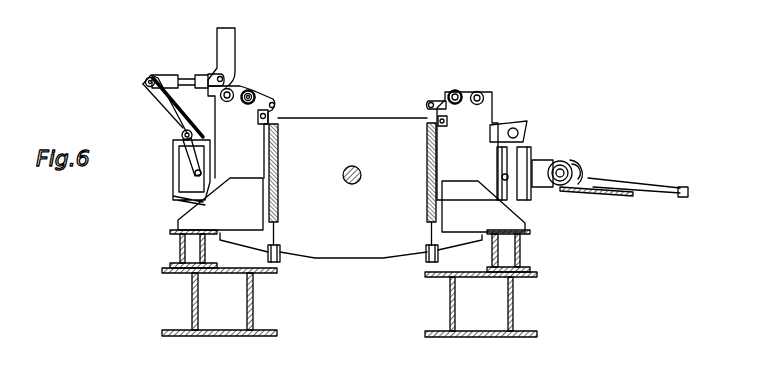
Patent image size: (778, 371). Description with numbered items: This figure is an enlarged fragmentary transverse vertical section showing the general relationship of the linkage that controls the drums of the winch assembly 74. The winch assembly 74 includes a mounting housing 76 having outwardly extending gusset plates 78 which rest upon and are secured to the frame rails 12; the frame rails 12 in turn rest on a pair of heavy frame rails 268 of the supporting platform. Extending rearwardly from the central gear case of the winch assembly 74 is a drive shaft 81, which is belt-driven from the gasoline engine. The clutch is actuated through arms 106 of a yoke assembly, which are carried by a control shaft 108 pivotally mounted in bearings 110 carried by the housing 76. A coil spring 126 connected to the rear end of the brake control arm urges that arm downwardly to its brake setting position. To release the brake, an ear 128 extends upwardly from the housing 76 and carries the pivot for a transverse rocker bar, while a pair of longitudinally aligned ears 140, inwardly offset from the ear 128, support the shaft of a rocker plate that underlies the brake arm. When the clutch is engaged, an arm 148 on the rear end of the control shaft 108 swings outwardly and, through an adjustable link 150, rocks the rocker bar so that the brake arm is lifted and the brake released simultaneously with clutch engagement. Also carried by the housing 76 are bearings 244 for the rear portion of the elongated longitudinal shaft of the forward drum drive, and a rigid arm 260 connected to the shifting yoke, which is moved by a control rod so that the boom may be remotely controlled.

The frame rails 12 is at (182, 242).
The winch assembly 74 is at (358, 110).
The mounting housing 76 is at (397, 248).
The gusset plates 78 is at (227, 192).
The drive shaft 81 is at (358, 187).
The arms 106 is at (198, 160).
The control shaft 108 is at (183, 138).
The bearings 110 is at (497, 133).
The coil spring 126 is at (280, 170).
The ear 128 is at (236, 99).
The ears 140 is at (276, 113).
The arm 148 is at (163, 97).
The adjustable link 150 is at (181, 76).
The bearings 244 is at (541, 166).
The rigid arm 260 is at (645, 187).
The frame rails 268 is at (252, 312).